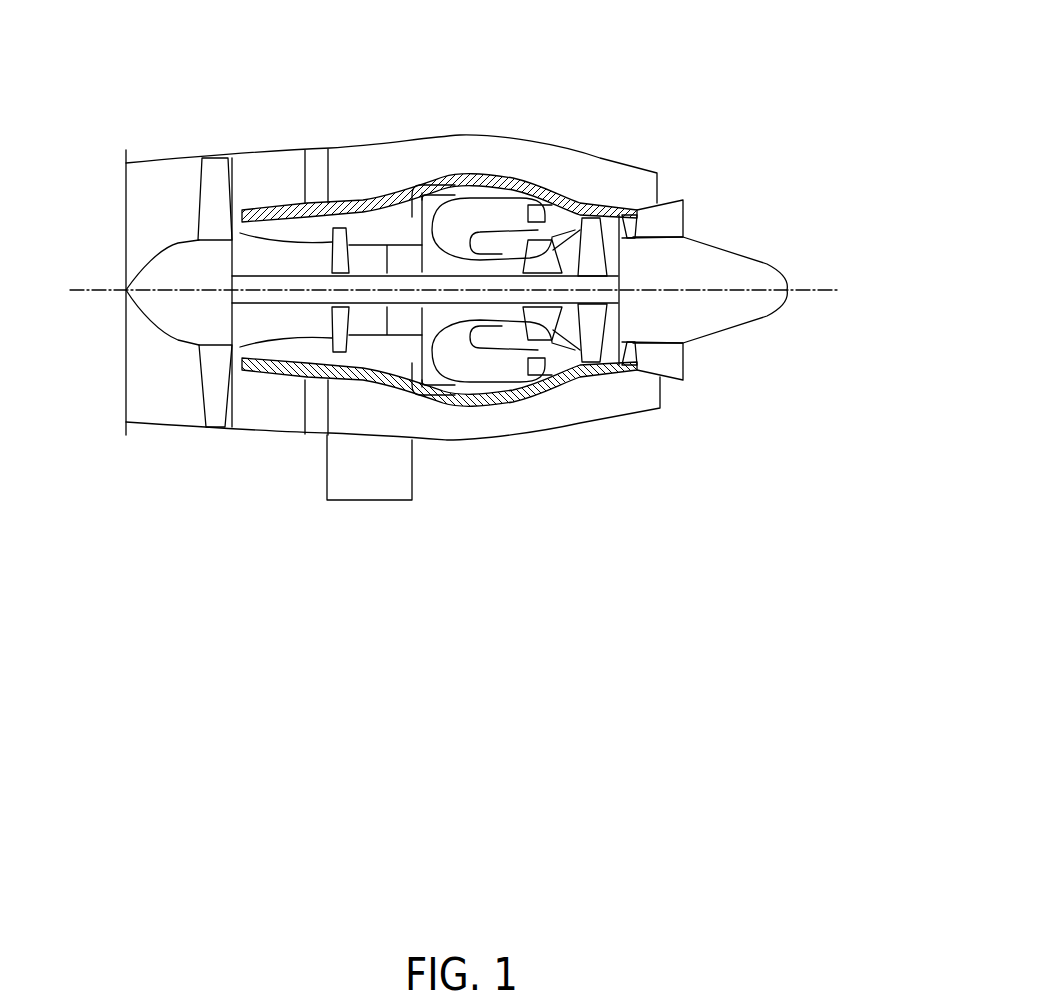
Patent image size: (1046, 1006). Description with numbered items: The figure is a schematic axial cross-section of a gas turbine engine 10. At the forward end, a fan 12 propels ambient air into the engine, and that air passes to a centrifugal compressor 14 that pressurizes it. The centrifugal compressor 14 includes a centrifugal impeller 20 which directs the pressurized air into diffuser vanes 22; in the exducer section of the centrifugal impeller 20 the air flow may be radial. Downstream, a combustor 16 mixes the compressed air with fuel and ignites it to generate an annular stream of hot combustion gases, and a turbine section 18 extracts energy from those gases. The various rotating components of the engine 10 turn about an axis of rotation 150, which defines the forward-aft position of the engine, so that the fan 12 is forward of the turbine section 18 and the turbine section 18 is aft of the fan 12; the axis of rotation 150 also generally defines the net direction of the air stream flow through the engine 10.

The gas turbine engine 10 is at (578, 106).
The fan 12 is at (212, 382).
The centrifugal compressor 14 is at (377, 240).
The combustor 16 is at (488, 207).
The turbine section 18 is at (570, 373).
The centrifugal impeller 20 is at (410, 260).
The diffuser vanes 22 is at (442, 392).
The axis of rotation 150 is at (795, 287).